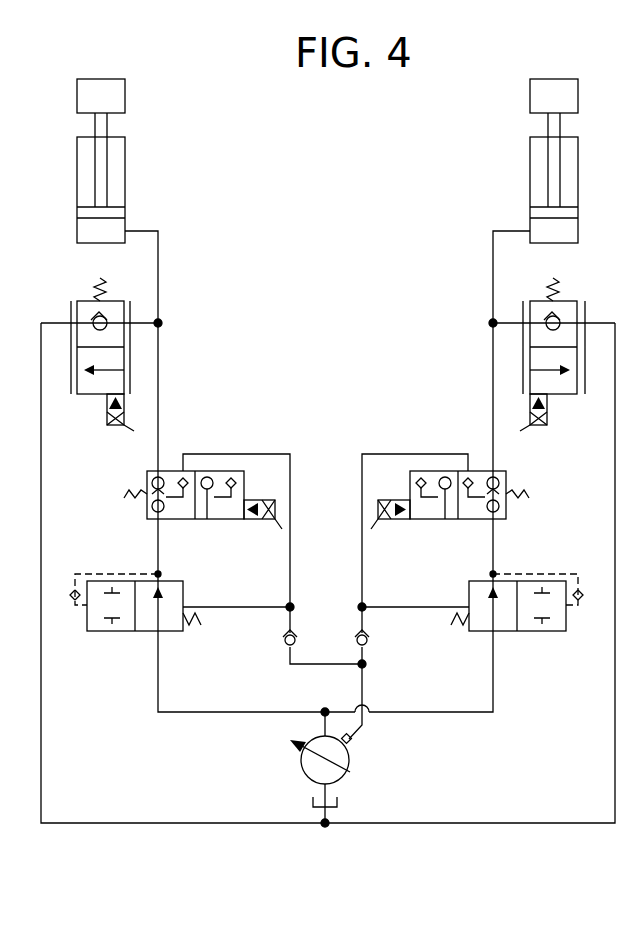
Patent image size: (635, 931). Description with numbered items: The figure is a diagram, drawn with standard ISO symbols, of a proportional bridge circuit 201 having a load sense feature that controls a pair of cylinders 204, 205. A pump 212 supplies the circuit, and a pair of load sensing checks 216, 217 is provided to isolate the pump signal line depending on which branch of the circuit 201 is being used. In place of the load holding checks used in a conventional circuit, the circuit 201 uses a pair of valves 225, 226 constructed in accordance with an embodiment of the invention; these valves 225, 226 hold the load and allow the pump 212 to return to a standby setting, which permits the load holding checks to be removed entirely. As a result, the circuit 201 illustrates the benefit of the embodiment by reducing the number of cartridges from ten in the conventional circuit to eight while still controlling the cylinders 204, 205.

The proportional bridge circuit 201 is at (207, 115).
The cylinder 204 is at (127, 183).
The cylinder 205 is at (528, 173).
The pump 212 is at (305, 770).
The load sensing check 216 is at (284, 646).
The load sensing check 217 is at (370, 646).
The valve 225 is at (170, 470).
The valve 226 is at (478, 470).